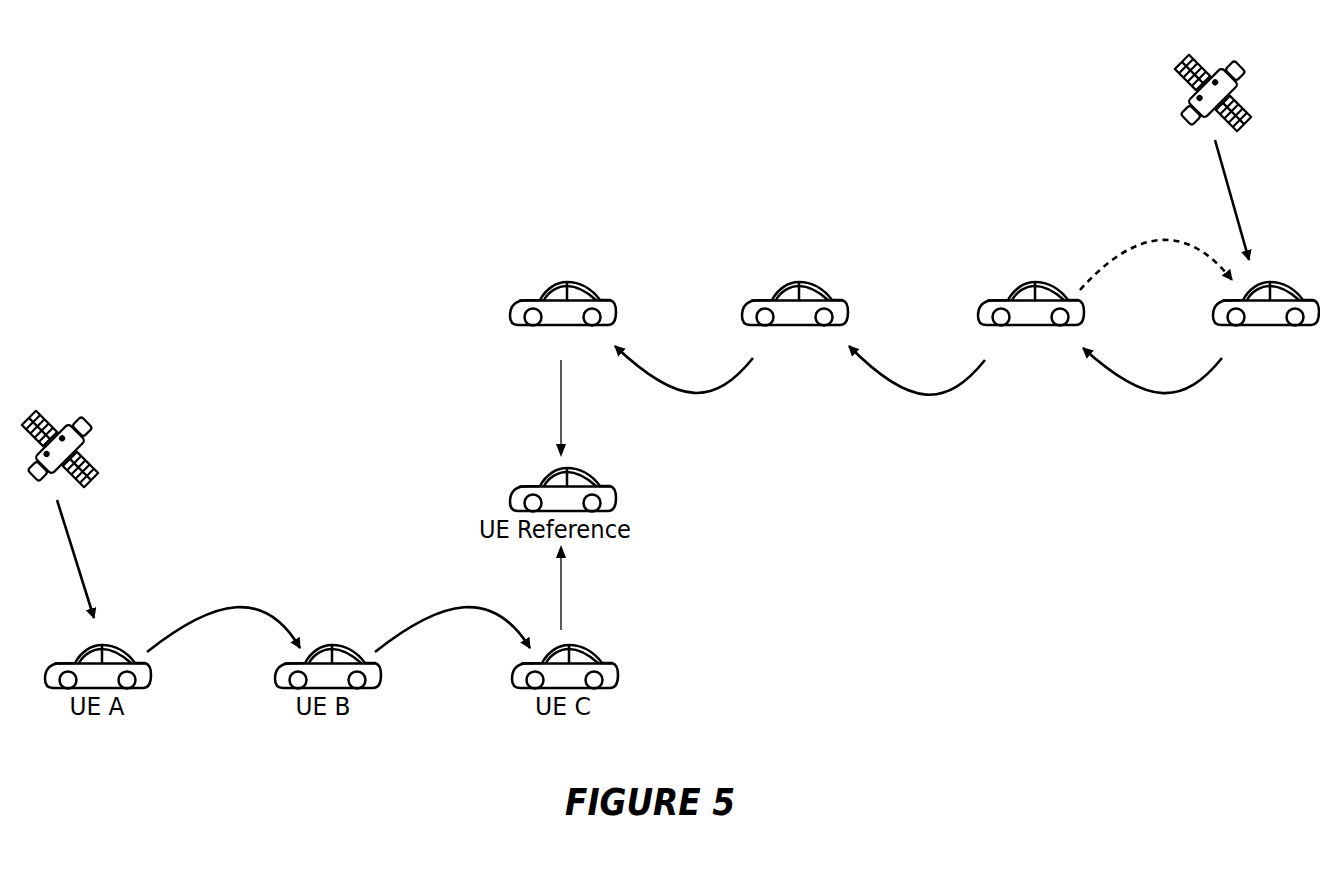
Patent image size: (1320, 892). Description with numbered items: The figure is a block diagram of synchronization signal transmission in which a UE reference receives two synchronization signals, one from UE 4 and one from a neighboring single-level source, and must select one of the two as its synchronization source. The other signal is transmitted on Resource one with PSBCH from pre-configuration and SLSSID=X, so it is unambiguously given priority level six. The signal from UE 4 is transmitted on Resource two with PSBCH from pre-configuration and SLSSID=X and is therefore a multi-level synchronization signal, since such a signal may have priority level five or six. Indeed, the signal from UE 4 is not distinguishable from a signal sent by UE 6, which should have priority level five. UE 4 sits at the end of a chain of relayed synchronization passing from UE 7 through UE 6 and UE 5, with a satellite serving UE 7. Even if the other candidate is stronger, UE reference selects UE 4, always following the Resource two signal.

The UE 4 is at (563, 320).
The UE 5 is at (795, 320).
The UE 6 is at (1031, 320).
The UE 7 is at (1266, 320).